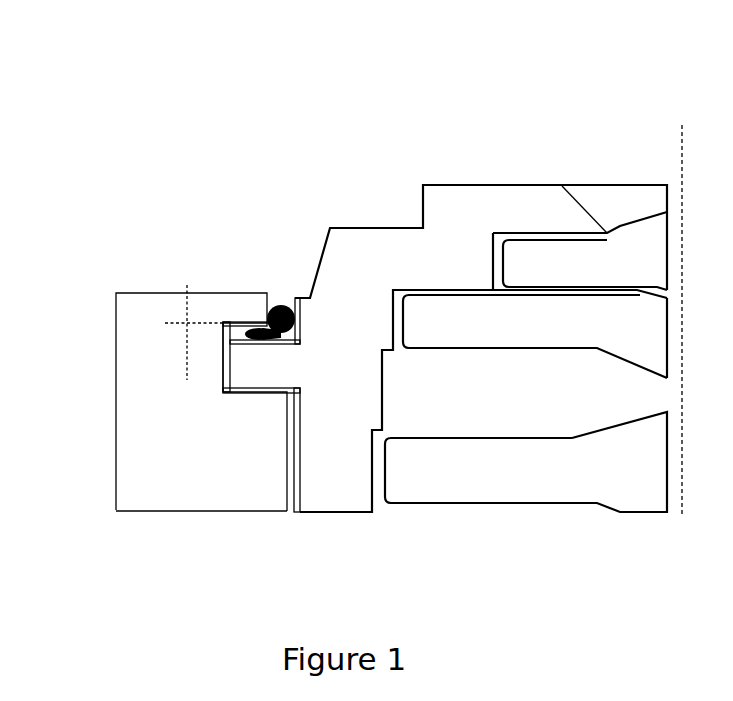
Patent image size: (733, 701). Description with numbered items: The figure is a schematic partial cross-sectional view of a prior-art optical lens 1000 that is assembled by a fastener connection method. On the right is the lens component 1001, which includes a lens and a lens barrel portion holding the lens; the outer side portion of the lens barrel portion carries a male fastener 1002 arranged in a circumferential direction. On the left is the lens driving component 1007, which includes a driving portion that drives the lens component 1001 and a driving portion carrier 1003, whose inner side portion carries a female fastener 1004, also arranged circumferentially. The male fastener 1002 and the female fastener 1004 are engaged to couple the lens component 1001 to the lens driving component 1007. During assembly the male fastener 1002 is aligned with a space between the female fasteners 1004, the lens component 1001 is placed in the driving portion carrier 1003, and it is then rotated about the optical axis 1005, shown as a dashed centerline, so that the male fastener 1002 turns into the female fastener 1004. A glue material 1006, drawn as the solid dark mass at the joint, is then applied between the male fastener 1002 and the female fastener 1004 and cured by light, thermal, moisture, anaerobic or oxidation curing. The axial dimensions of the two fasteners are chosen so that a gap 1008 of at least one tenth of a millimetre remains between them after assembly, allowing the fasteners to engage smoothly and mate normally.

The optical lens 1000 is at (300, 182).
The lens component 1001 is at (457, 227).
The male fastener 1002 is at (263, 370).
The driving portion carrier 1003 is at (152, 433).
The female fastener 1004 is at (226, 332).
The optical axis 1005 is at (682, 155).
The glue material 1006 is at (282, 303).
The lens driving component 1007 is at (220, 470).
The gap 1008 is at (177, 323).